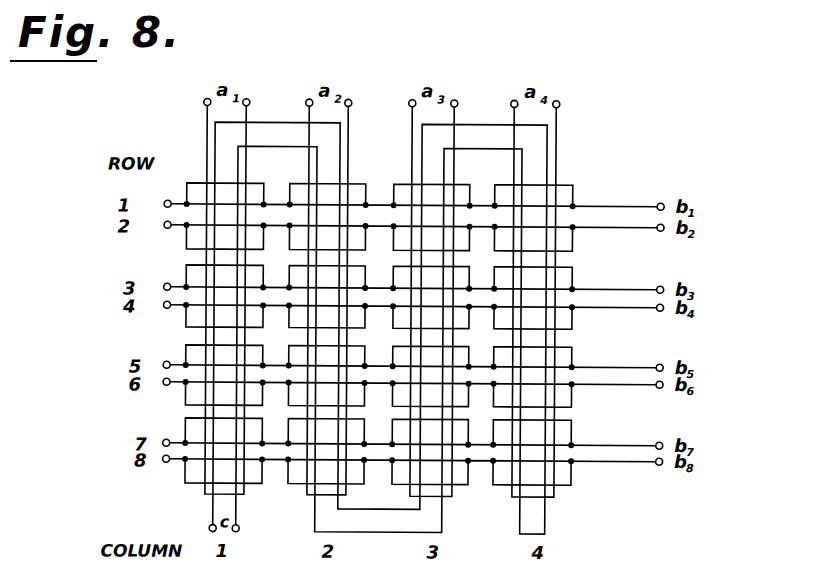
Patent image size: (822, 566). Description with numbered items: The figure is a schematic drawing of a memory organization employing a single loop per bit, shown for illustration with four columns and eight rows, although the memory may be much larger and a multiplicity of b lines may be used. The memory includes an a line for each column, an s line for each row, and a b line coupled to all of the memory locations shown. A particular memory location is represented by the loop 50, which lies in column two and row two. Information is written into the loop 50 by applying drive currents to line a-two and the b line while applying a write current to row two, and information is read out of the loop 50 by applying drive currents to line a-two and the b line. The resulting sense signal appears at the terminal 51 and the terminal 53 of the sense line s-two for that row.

The loop 50 is at (367, 231).
The terminal 51 is at (169, 229).
The terminal 53 is at (658, 232).